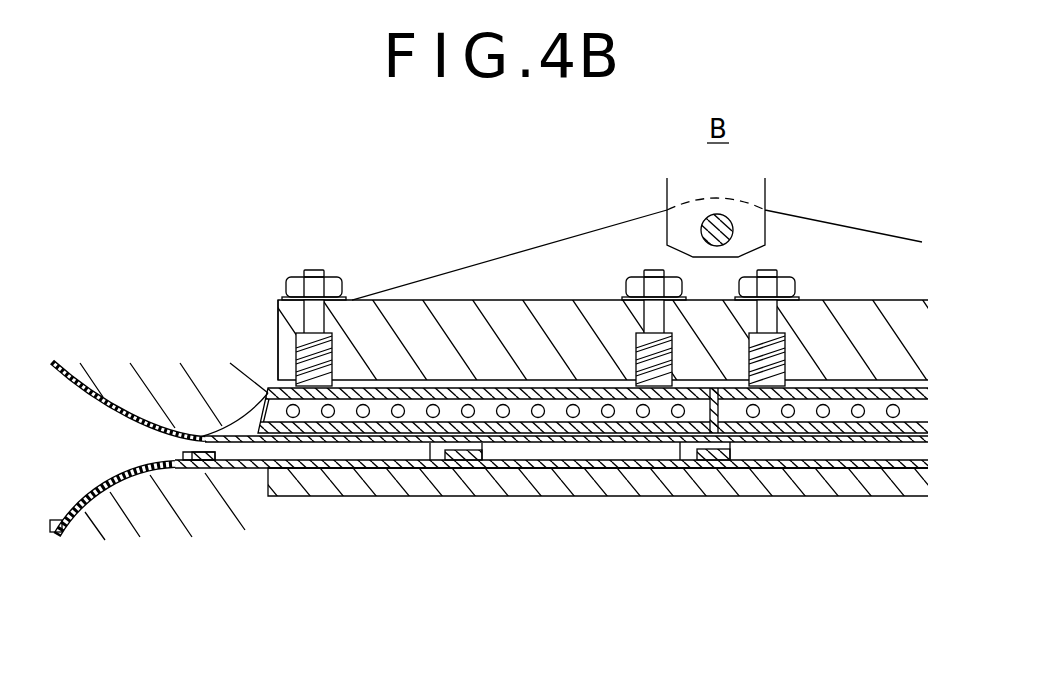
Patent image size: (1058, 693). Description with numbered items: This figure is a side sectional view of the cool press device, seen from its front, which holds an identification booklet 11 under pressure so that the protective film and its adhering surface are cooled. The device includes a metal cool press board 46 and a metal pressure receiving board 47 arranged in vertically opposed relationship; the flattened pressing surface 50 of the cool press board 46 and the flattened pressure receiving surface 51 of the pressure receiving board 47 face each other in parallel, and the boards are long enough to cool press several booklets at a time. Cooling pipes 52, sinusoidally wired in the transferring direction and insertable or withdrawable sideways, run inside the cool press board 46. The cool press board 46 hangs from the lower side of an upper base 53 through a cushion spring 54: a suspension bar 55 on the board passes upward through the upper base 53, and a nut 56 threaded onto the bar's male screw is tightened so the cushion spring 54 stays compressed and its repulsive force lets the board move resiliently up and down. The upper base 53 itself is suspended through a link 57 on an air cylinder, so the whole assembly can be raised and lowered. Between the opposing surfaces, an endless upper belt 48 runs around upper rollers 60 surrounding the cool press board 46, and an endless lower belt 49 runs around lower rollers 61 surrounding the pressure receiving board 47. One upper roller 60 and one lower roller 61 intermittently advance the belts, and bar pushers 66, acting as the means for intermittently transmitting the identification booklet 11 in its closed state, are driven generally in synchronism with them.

The identification booklet 11 is at (353, 455).
The cool press board 46 is at (458, 393).
The pressure receiving board 47 is at (607, 483).
The upper belt 48 is at (238, 430).
The lower belt 49 is at (278, 470).
The pressing surface 50 is at (395, 395).
The pressure receiving surface 51 is at (405, 468).
The cooling pipes 52 is at (541, 399).
The upper base 53 is at (580, 323).
The cushion spring 54 is at (279, 355).
The suspension bar 55 is at (297, 340).
The nut 56 is at (326, 276).
The link 57 is at (748, 222).
The upper rollers 60 is at (150, 405).
The lower rollers 61 is at (131, 510).
The bar pushers 66 is at (189, 461).